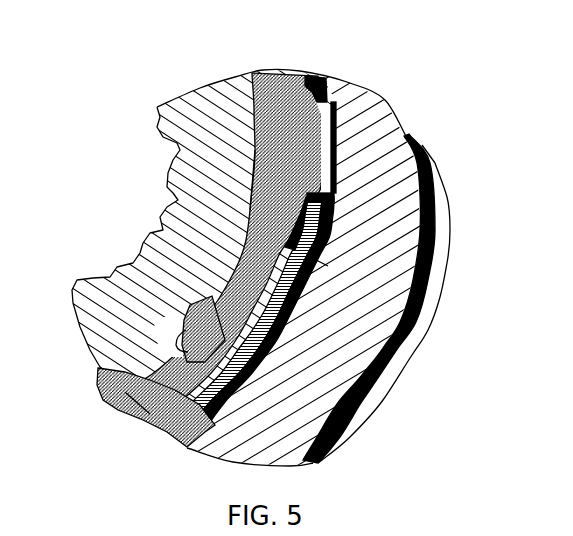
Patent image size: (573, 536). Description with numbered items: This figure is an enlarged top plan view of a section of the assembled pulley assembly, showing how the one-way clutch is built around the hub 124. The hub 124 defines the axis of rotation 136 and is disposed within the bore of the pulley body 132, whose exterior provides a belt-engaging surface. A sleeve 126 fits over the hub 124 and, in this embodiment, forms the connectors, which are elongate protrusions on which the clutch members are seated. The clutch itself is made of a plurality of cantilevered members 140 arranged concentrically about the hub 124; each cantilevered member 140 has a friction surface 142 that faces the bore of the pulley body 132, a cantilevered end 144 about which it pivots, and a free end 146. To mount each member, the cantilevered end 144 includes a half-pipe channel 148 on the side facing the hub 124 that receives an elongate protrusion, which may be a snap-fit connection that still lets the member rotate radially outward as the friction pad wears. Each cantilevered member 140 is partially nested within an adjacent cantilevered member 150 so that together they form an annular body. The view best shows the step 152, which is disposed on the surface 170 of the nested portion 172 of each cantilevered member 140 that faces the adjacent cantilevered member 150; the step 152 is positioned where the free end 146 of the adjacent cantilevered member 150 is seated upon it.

The hub 124 is at (177, 157).
The sleeve 126 is at (252, 212).
The pulley body 132 is at (417, 143).
The axis of rotation 136 is at (143, 397).
The cantilevered member 140 is at (333, 110).
The friction surface 142 is at (315, 78).
The cantilevered end 144 is at (197, 417).
The free end 146 is at (334, 216).
The half-pipe channel 148 is at (170, 413).
The adjacent cantilevered member 150 is at (103, 390).
The step 152 is at (322, 264).
The surface 170 is at (258, 193).
The nested portion 172 is at (190, 312).